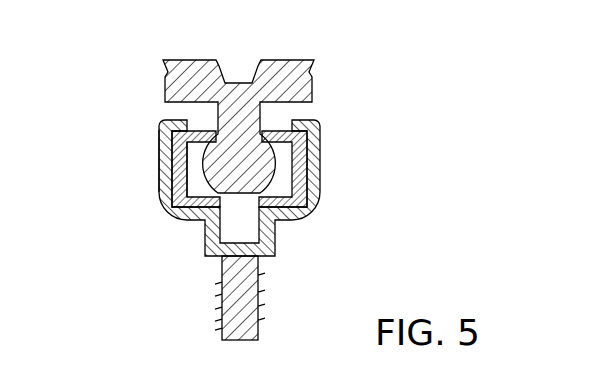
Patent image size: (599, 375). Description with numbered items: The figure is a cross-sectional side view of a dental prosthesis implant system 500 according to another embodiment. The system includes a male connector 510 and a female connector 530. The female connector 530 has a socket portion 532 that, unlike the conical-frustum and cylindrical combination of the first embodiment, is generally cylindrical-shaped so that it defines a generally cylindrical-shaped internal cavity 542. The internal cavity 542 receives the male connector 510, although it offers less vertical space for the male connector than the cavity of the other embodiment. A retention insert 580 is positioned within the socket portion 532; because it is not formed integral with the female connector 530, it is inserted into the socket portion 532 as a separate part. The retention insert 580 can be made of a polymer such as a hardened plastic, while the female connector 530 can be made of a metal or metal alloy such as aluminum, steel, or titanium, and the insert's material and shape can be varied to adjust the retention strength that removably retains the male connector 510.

The dental prosthesis implant system 500 is at (358, 97).
The male connector 510 is at (297, 53).
The female connector 530 is at (323, 182).
The socket portion 532 is at (313, 150).
The internal cavity 542 is at (193, 180).
The retention insert 580 is at (168, 168).